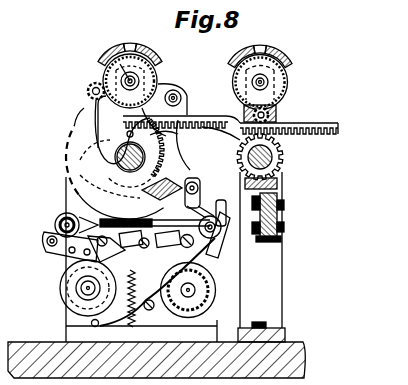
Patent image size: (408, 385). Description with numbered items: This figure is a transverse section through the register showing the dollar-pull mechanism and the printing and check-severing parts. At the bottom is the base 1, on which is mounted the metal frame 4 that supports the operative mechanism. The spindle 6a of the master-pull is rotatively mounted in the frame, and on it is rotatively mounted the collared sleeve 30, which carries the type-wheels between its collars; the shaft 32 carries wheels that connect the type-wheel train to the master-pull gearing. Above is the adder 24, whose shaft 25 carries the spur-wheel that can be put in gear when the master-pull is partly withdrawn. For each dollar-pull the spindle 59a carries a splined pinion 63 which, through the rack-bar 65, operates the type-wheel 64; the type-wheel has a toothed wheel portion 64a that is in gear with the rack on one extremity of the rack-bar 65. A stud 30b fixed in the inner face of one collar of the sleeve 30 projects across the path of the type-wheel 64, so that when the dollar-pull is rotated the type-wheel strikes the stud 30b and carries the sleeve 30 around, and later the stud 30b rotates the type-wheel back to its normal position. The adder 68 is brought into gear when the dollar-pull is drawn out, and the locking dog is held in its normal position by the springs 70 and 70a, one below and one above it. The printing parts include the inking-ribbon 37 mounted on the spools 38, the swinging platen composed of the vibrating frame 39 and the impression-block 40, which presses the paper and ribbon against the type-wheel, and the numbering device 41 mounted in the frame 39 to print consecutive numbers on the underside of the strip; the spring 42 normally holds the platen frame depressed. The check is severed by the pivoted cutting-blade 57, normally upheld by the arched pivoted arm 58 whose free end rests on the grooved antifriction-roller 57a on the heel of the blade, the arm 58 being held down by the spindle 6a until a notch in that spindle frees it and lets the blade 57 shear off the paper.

The base 1 is at (303, 360).
The metal frame 4 is at (66, 324).
The spindle of the master-pull 6a is at (124, 130).
The adder 24 is at (135, 81).
The shaft of the adder 25 is at (114, 54).
The collared sleeve 30 is at (115, 163).
The stud 30b is at (179, 141).
The shaft 32 is at (181, 98).
The inking-ribbon 37 is at (68, 256).
The spools 38 is at (142, 293).
The vibrating frame 39 is at (145, 248).
The impression-block 40 is at (142, 298).
The numbering device 41 is at (155, 212).
The spring 42 is at (150, 310).
The cutting-blade 57 is at (192, 178).
The grooved antifriction-roller 57a is at (60, 247).
The arched pivoted arm 58 is at (64, 214).
The spindle of the dollar-pull 59a is at (221, 137).
The pinion 63 is at (282, 158).
The type-wheel 64 is at (90, 128).
The toothed wheel portion 64a is at (166, 177).
The rack-bar 65 is at (320, 123).
The adder 68 is at (268, 83).
The spring 70 is at (268, 241).
The spring 70a is at (280, 202).